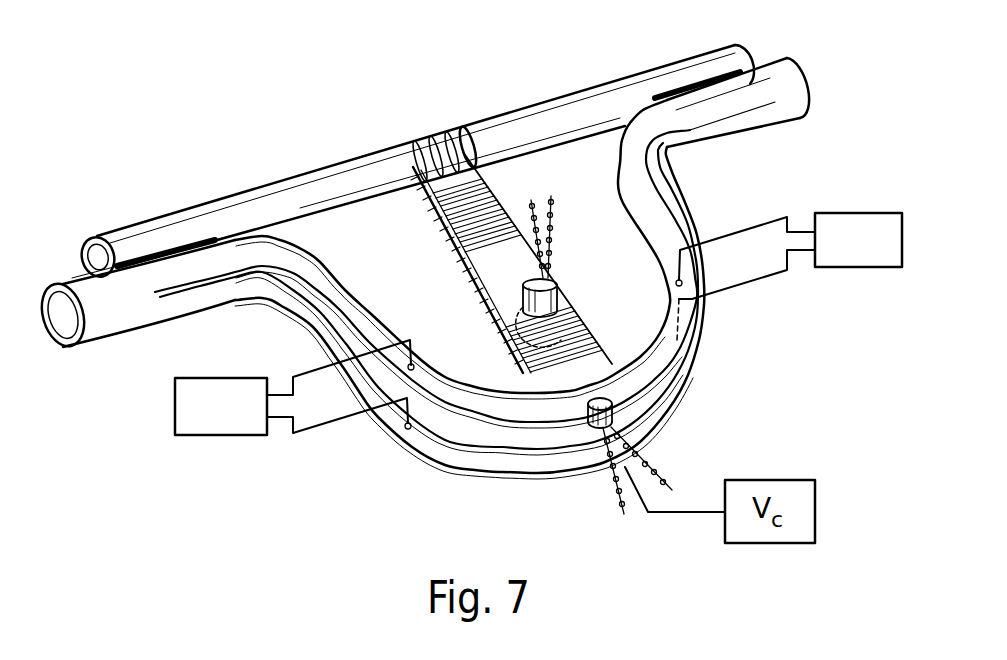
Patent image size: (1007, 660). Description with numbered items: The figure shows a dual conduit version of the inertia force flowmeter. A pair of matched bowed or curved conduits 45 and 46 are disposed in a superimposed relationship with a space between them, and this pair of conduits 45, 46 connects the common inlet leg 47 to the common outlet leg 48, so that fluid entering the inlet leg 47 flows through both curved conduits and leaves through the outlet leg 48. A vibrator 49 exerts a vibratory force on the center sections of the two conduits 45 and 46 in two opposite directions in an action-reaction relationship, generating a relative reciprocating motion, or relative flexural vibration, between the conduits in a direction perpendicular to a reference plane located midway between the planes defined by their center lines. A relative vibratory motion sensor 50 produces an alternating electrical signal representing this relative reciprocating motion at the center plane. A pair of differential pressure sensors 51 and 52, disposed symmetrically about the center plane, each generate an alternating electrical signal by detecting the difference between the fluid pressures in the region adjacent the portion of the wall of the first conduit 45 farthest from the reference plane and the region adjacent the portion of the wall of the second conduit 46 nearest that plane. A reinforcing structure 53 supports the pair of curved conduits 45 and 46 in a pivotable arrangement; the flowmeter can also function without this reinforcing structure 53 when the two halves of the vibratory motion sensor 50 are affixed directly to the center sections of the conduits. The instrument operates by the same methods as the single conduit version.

The first bowed or curved conduit 45 is at (458, 400).
The second bowed or curved conduit 46 is at (485, 458).
The common inlet leg 47 is at (103, 313).
The common outlet leg 48 is at (788, 98).
The vibrator 49 is at (613, 406).
The relative vibratory motion sensor 50 is at (558, 302).
The differential pressure sensor 51 is at (221, 437).
The differential pressure sensor 52 is at (853, 268).
The reinforcing structure 53 is at (370, 177).